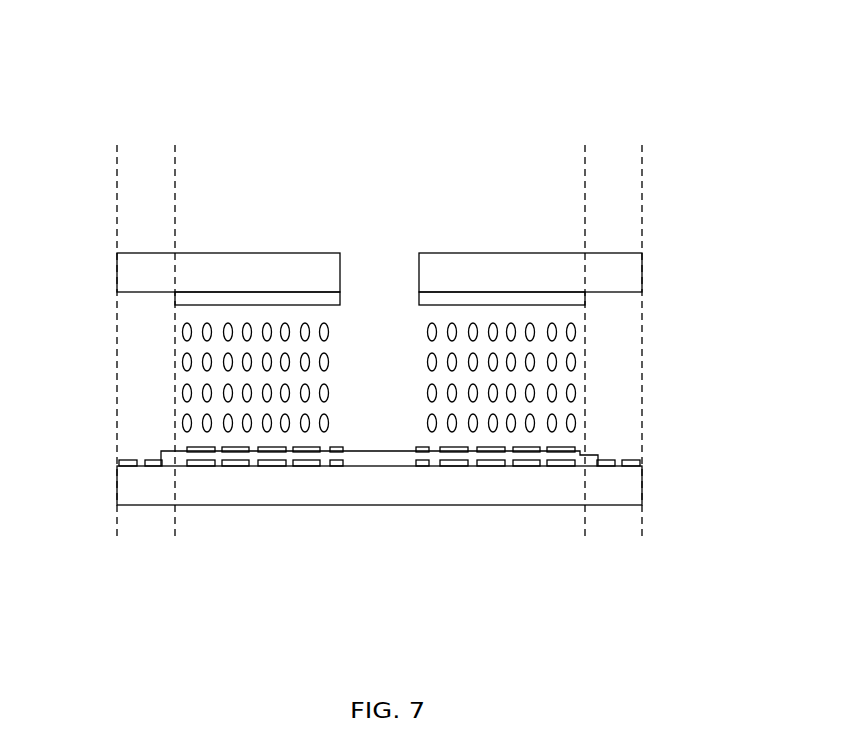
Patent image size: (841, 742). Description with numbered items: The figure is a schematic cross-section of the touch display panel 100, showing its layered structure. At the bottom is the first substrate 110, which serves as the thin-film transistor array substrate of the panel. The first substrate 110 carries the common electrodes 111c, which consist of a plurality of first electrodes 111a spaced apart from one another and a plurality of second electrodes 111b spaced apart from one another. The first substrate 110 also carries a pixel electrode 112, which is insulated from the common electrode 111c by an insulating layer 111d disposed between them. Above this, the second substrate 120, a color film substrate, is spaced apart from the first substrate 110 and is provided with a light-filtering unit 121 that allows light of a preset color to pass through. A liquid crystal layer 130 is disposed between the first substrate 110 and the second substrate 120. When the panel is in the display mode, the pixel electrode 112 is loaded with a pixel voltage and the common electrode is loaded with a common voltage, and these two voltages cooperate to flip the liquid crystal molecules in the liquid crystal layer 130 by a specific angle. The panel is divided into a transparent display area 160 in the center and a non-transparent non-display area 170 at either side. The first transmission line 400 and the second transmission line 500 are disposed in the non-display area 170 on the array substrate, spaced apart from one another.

The touch display panel 100 is at (365, 29).
The first substrate 110 is at (628, 485).
The first electrodes 111a is at (342, 452).
The second electrodes 111b is at (260, 452).
The common electrodes 111c is at (497, 547).
The insulating layer 111d is at (594, 456).
The pixel electrode 112 is at (562, 466).
The second substrate 120 is at (630, 272).
The light-filtering unit 121 is at (577, 303).
The liquid crystal layer 130 is at (575, 385).
The display area 160 is at (312, 147).
The non-display area 170 is at (137, 146).
The first transmission line 400 is at (150, 466).
The second transmission line 500 is at (125, 465).